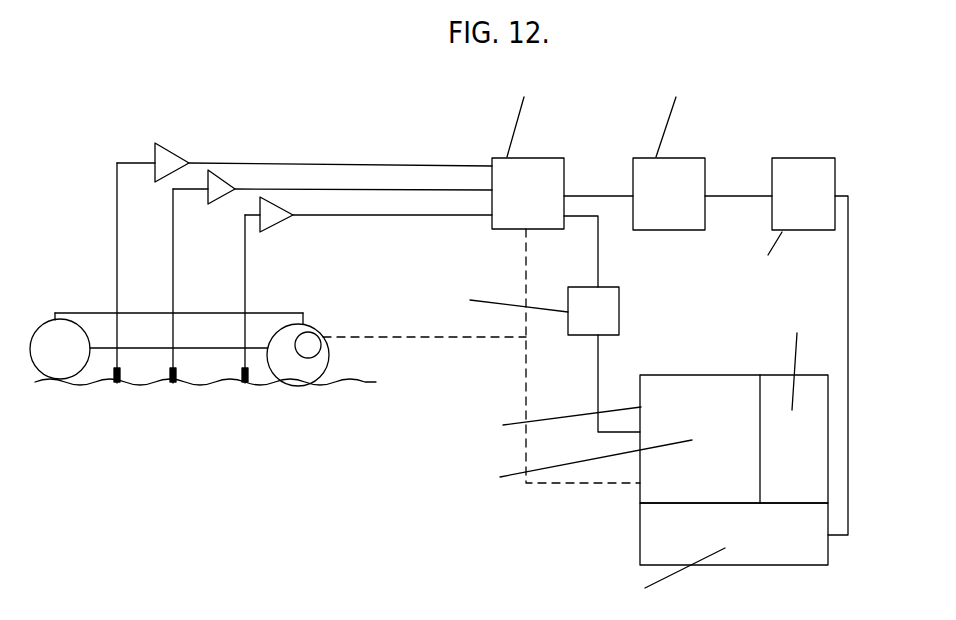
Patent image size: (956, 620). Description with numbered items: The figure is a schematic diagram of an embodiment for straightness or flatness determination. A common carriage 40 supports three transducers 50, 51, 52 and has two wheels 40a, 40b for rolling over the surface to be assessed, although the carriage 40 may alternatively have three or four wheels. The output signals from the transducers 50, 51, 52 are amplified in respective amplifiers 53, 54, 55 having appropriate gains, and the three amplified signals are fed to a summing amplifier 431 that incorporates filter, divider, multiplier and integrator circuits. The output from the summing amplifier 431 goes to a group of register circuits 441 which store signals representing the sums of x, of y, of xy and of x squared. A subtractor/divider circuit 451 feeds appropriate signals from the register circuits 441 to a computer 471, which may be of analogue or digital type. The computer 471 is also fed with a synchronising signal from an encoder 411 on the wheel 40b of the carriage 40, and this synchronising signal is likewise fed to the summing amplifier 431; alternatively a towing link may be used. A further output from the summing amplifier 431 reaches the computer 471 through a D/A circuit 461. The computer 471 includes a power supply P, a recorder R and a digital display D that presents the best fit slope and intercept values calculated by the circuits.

The common carriage 40 is at (117, 318).
The wheel 40a is at (63, 338).
The wheel 40b is at (318, 358).
The encoder 411 is at (310, 343).
The transducer 50 is at (168, 372).
The transducer 51 is at (212, 418).
The transducer 52 is at (248, 372).
The amplifier 53 is at (170, 157).
The amplifier 54 is at (215, 192).
The amplifier 55 is at (273, 212).
The summing amplifier 431 is at (524, 167).
The register circuits 441 is at (668, 170).
The subtractor/divider circuit 451 is at (783, 167).
The D/A circuit 461 is at (603, 313).
The computer 471 is at (707, 392).